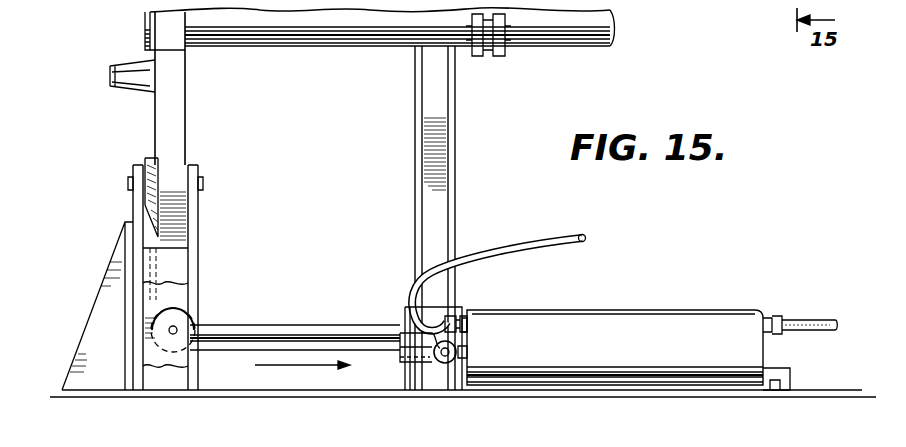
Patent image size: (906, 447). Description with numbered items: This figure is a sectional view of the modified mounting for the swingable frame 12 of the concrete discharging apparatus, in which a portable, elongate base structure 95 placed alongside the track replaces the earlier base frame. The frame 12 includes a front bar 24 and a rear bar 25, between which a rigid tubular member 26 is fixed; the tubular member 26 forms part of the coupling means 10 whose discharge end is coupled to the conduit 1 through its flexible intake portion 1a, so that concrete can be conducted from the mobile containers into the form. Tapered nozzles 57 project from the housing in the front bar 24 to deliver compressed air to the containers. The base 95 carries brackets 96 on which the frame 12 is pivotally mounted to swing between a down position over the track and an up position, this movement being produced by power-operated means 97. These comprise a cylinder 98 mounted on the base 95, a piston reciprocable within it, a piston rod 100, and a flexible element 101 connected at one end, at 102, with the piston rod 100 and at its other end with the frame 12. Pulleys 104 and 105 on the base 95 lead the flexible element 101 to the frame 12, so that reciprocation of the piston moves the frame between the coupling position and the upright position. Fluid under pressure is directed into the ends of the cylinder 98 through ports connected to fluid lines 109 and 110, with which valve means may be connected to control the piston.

The conduit 1 is at (589, 47).
The flexible intake portion 1a is at (534, 46).
The coupling means 10 is at (378, 44).
The swingable frame 12 is at (153, 128).
The front bar 24 is at (181, 112).
The rear bar 25 is at (453, 150).
The rigid tubular member 26 is at (299, 36).
The tapered nozzles 57 is at (115, 86).
The base structure 95 is at (110, 399).
The brackets 96 is at (404, 308).
The power-operated means 97 is at (613, 311).
The cylinder 98 is at (616, 345).
The piston rod 100 is at (468, 344).
The flexible element 101 is at (160, 235).
The connection of flexible element to piston rod 102 is at (440, 352).
The pulley 104 is at (182, 300).
The pulley 105 is at (172, 172).
The fluid line 109 is at (803, 318).
The fluid line 110 is at (507, 250).